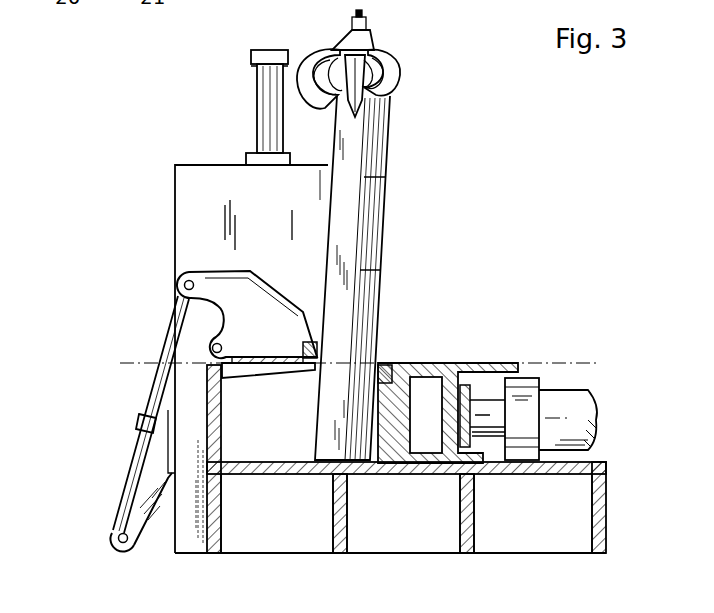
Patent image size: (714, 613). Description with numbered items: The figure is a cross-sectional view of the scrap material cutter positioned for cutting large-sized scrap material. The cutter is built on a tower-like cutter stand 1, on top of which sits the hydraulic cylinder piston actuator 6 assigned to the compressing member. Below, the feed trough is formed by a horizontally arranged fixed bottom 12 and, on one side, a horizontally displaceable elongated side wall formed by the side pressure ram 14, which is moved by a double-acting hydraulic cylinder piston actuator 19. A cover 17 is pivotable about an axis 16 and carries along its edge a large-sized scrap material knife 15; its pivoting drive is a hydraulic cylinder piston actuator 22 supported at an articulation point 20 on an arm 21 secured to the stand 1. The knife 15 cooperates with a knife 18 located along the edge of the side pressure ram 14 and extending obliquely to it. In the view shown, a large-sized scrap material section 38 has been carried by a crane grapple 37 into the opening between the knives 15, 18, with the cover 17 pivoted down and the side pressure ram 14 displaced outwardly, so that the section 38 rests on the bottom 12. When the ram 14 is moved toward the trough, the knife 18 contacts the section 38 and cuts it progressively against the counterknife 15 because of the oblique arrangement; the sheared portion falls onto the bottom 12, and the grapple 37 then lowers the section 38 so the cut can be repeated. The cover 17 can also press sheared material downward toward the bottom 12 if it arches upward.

The cutter stand 1 is at (192, 188).
The hydraulic cylinder piston actuator 6 is at (262, 93).
The fixed bottom 12 is at (275, 465).
The side pressure ram 14 is at (452, 372).
The large-sized scrap material knife 15 is at (300, 345).
The axis 16 is at (212, 347).
The cover 17 is at (205, 290).
The knife 18 is at (385, 363).
The hydraulic cylinder piston actuator 19 is at (570, 405).
The articulation point 20 is at (118, 538).
The arm 21 is at (155, 513).
The hydraulic cylinder piston actuator 22 is at (140, 447).
The crane grapple 37 is at (388, 62).
The large-sized scrap material section 38 is at (357, 172).